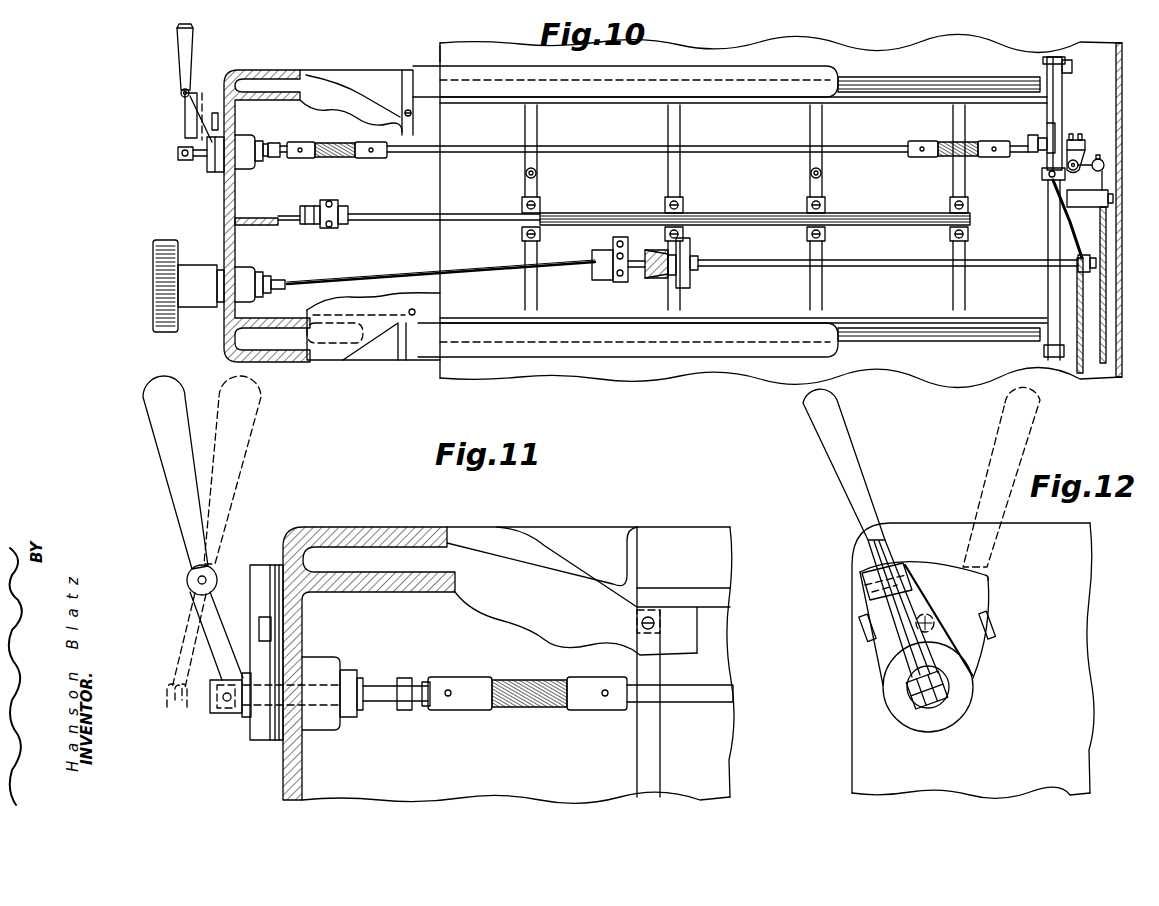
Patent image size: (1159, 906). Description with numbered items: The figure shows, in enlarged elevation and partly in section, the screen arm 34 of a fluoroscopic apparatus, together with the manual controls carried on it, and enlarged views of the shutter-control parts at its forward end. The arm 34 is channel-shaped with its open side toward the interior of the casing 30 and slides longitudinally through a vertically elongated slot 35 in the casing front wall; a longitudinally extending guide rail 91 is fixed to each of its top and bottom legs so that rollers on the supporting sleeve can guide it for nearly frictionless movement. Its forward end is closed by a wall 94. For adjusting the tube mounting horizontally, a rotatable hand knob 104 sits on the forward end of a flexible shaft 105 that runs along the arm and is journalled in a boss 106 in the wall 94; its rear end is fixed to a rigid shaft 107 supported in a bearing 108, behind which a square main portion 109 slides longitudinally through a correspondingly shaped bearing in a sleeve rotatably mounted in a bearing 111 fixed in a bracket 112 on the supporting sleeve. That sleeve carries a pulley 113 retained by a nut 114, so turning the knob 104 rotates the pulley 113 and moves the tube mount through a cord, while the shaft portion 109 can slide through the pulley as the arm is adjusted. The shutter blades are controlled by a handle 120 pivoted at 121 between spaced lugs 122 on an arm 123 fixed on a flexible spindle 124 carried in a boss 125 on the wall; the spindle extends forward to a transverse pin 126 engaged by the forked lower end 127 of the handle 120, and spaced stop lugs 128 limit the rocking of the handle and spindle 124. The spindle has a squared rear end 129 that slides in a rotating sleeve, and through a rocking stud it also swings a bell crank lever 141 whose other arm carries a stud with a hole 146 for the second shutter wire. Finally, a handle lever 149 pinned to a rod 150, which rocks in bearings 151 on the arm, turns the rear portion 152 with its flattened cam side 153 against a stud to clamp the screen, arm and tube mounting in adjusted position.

In FIG. 10, the casing 30 is at (871, 50).
In FIG. 10, the arm 34 is at (365, 70).
In FIG. 11, the arm 34 is at (500, 527).
In FIG. 12, the arm 34 is at (904, 523).
In FIG. 10, the slot 35 is at (440, 46).
In FIG. 10, the guide rail 91 is at (868, 83).
In FIG. 10, the wall 94 is at (226, 190).
In FIG. 11, the wall 94 is at (303, 790).
In FIG. 12, the wall 94 is at (1092, 595).
In FIG. 10, the hand knob 104 is at (150, 270).
In FIG. 10, the flexible shaft 105 is at (340, 278).
In FIG. 10, the boss 106 is at (243, 268).
In FIG. 10, the rigid shaft 107 is at (600, 268).
In FIG. 10, the bearing 108 is at (617, 282).
In FIG. 10, the main portion 109 is at (898, 262).
In FIG. 10, the bearing 111 is at (655, 250).
In FIG. 10, the bracket 112 is at (652, 280).
In FIG. 10, the pulley 113 is at (690, 246).
In FIG. 10, the nut 114 is at (698, 260).
In FIG. 10, the handle 120 is at (170, 32).
In FIG. 11, the handle 120 is at (176, 483).
In FIG. 12, the handle 120 is at (859, 470).
In FIG. 10, the pivot 121 is at (180, 94).
In FIG. 11, the pivot 121 is at (188, 580).
In FIG. 12, the pivot 121 is at (865, 590).
In FIG. 10, the lugs 122 is at (180, 92).
In FIG. 11, the lugs 122 is at (189, 575).
In FIG. 12, the lugs 122 is at (900, 565).
In FIG. 10, the arm 123 is at (206, 166).
In FIG. 11, the arm 123 is at (260, 726).
In FIG. 12, the arm 123 is at (892, 675).
In FIG. 10, the flexible spindle 124 is at (267, 162).
In FIG. 11, the flexible spindle 124 is at (380, 704).
In FIG. 10, the boss 125 is at (242, 138).
In FIG. 11, the boss 125 is at (325, 660).
In FIG. 10, the transverse pin 126 is at (176, 152).
In FIG. 11, the transverse pin 126 is at (224, 702).
In FIG. 12, the transverse pin 126 is at (950, 690).
In FIG. 11, the forked lower end 127 is at (167, 705).
In FIG. 10, the stop lugs 128 is at (218, 118).
In FIG. 11, the stop lugs 128 is at (272, 628).
In FIG. 12, the stop lugs 128 is at (862, 632).
In FIG. 10, the squared rear end 129 is at (1032, 135).
In FIG. 10, the bell crank lever 141 is at (1082, 152).
In FIG. 10, the hole 146 is at (1104, 170).
In FIG. 10, the handle lever 149 is at (322, 200).
In FIG. 10, the rod 150 is at (366, 218).
In FIG. 10, the bearings 151 is at (522, 205).
In FIG. 10, the rear portion 152 is at (914, 222).
In FIG. 10, the flattened side 153 is at (858, 213).